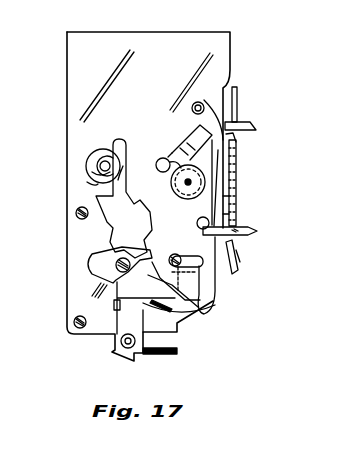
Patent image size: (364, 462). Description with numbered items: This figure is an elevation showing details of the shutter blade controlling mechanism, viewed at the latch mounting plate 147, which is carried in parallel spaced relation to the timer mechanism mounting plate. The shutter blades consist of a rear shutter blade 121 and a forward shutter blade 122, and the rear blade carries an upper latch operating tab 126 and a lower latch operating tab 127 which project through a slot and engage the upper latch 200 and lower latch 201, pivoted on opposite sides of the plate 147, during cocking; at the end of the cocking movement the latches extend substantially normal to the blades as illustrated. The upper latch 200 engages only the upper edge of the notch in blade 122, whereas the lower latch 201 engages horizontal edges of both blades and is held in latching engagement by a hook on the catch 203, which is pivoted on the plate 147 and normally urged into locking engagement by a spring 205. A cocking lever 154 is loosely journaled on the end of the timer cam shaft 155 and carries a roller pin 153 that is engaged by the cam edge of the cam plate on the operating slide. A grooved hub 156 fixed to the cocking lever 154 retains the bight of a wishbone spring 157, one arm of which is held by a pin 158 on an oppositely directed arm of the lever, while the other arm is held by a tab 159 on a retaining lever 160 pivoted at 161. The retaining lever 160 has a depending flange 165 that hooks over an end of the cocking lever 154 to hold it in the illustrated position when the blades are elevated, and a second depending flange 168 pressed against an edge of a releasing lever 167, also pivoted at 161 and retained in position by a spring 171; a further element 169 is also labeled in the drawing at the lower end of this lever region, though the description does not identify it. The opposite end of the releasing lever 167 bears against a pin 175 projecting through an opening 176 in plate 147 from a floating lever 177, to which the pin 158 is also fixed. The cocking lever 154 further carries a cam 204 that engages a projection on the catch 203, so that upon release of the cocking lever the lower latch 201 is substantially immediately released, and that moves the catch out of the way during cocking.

The rear shutter blade 121 is at (238, 158).
The forward shutter blade 122 is at (239, 97).
The upper latch operating tab 126 is at (238, 140).
The lower latch operating tab 127 is at (239, 259).
The latch mounting plate 147 is at (158, 82).
The roller pin 153 is at (206, 107).
The cocking lever 154 is at (197, 128).
The timer cam shaft 155 is at (192, 182).
The grooved hub 156 is at (238, 161).
The wishbone spring 157 is at (238, 248).
The pin 158 is at (180, 257).
The tab 159 is at (110, 250).
The retaining lever 160 is at (112, 279).
The pivot 161 is at (118, 266).
The depending flange 165 is at (176, 286).
The releasing lever 167 is at (206, 311).
The depending flange 168 is at (116, 306).
The pivot 169 is at (124, 348).
The spring 171 is at (166, 353).
The pin 175 is at (103, 149).
The opening 176 is at (95, 185).
The floating lever 177 is at (107, 165).
The upper latch 200 is at (244, 125).
The lower latch 201 is at (258, 232).
The catch 203 is at (238, 201).
The cam 204 is at (237, 214).
The spring 205 is at (160, 158).